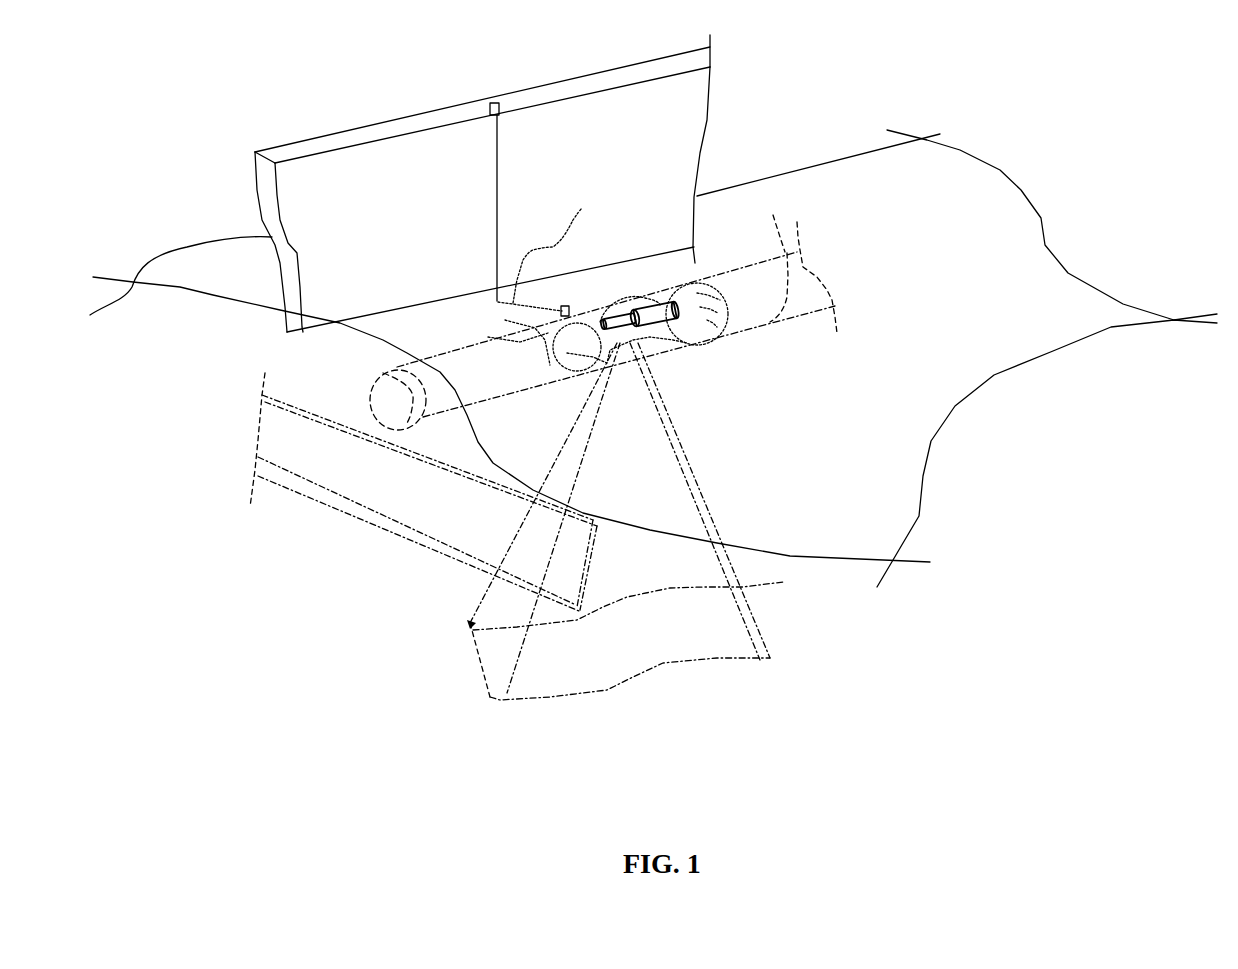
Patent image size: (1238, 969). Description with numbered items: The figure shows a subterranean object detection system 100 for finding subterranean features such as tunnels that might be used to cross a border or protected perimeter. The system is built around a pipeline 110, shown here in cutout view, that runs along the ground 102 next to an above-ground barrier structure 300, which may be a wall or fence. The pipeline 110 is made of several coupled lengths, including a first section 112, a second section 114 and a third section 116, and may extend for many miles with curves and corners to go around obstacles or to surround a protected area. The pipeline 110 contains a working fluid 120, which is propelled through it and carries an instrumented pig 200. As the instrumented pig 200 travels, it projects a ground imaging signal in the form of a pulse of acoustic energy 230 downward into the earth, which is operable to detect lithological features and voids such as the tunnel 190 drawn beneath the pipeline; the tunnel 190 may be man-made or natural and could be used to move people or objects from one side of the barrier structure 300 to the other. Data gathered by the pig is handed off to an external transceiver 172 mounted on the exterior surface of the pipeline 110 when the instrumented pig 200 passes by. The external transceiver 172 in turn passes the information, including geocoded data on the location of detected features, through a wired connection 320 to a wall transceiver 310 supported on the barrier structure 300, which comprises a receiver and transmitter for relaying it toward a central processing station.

The subterranean object detection system 100 is at (202, 141).
The ground 102 is at (932, 168).
The pipeline 110 is at (872, 311).
The first section 112 is at (799, 266).
The second section 114 is at (543, 325).
The third section 116 is at (410, 362).
The working fluid 120 is at (723, 333).
The external transceiver 172 is at (517, 327).
The tunnel 190 is at (367, 527).
The instrumented pig 200 is at (683, 330).
The pulse of acoustic energy 230 is at (665, 476).
The above-ground barrier structure 300 is at (711, 163).
The wall transceiver 310 is at (503, 108).
The wired connection 320 is at (500, 167).